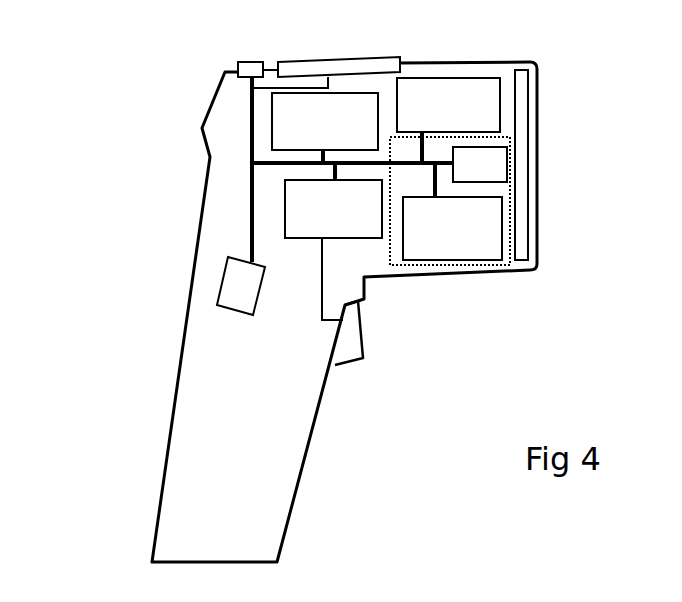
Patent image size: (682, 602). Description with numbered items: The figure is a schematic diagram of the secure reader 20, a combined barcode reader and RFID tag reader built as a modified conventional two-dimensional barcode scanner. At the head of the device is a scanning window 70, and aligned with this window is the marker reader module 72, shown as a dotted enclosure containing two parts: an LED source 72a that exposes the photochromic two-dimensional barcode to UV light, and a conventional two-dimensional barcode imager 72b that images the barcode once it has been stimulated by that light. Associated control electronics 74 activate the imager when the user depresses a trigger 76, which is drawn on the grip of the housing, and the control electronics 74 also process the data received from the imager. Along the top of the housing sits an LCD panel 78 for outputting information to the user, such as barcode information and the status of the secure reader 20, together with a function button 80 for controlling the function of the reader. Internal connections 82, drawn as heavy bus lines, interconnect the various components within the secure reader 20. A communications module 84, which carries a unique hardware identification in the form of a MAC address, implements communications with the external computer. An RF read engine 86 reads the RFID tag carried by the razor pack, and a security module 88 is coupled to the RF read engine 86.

The secure reader 20 is at (98, 448).
The scanning window 70 is at (530, 242).
The marker reader module 72 is at (428, 267).
The LED source 72a is at (500, 147).
The 2D barcode imager 72b is at (508, 215).
The control electronics 74 is at (300, 240).
The trigger 76 is at (365, 345).
The LCD panel 78 is at (390, 57).
The function button 80 is at (252, 60).
The internal connections 82 is at (248, 175).
The communications module 84 is at (232, 312).
The RF read engine 86 is at (437, 75).
The security module 88 is at (272, 100).